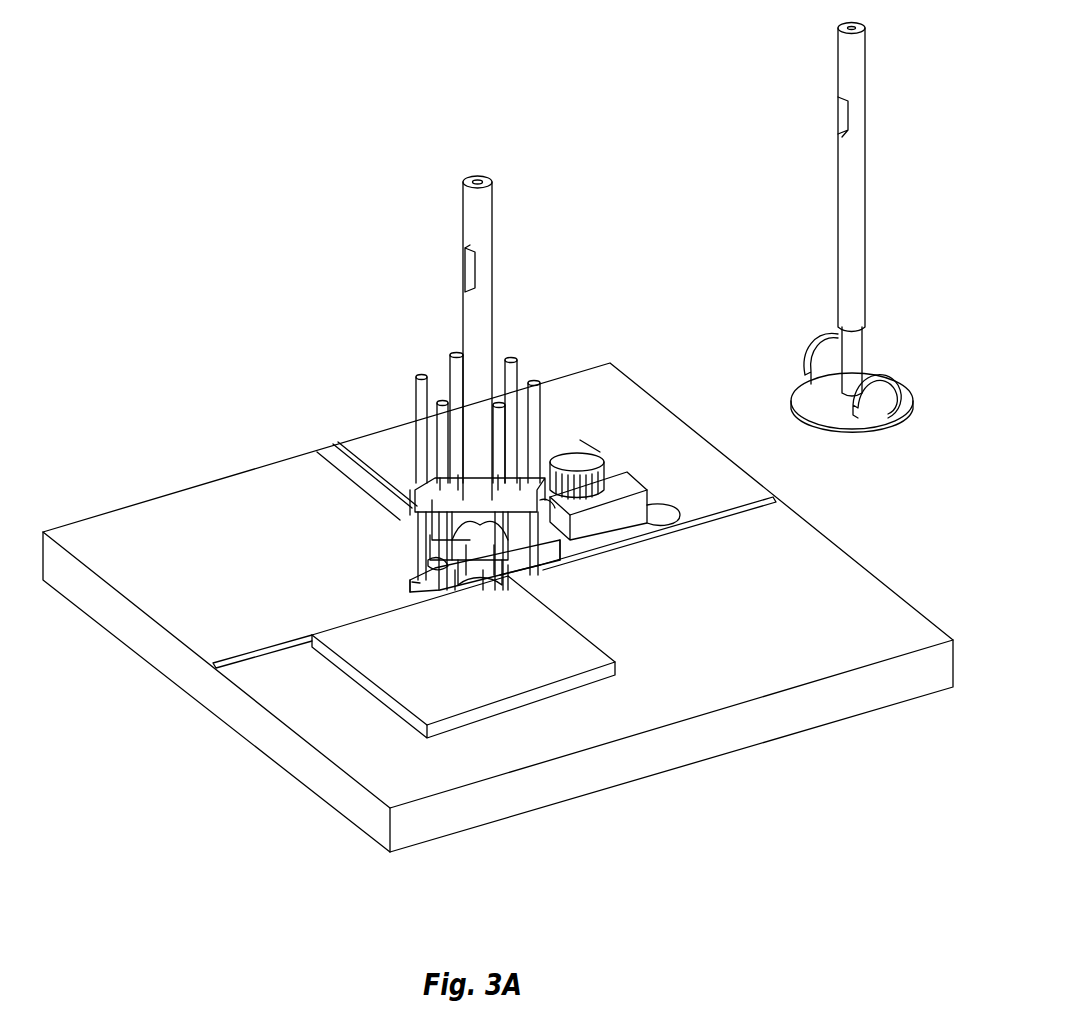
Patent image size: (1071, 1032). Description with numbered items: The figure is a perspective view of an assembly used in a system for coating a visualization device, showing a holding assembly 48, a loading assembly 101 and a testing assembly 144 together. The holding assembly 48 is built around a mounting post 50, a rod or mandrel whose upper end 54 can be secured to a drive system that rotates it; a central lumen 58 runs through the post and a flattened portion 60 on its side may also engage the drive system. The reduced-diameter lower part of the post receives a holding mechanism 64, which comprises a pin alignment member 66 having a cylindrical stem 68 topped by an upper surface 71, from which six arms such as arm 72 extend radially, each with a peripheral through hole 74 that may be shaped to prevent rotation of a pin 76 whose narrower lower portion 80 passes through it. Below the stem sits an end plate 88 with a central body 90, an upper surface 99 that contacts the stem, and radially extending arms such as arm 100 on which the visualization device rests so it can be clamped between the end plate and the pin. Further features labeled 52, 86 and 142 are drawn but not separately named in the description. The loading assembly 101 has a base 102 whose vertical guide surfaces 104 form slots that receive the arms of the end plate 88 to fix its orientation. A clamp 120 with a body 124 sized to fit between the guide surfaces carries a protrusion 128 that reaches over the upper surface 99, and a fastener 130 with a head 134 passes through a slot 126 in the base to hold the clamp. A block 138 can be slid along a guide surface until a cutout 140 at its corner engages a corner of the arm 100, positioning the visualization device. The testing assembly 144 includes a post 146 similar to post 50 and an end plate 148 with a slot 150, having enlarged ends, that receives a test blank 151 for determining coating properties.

The holding assembly 48 is at (415, 356).
The mounting post 50 is at (483, 301).
The shaft body 52 is at (454, 301).
The upper end 54 is at (480, 178).
The central lumen 58 is at (476, 178).
The flattened portion 60 is at (466, 270).
The holding mechanism 64 is at (388, 480).
The pin alignment member 66 is at (486, 585).
The stem 68 is at (463, 585).
The upper surface 71 is at (442, 440).
The arm 72 is at (415, 496).
The peripheral through hole 74 is at (412, 482).
The pin 76 is at (448, 522).
The lower portion 80 is at (450, 536).
The pins 86 is at (452, 470).
The end plate 88 is at (525, 593).
The central body 90 is at (440, 583).
The upper surface 99 is at (458, 552).
The arm 100 is at (446, 567).
The loading assembly 101 is at (498, 607).
The base 102 is at (72, 592).
The vertical guide surfaces 104 is at (252, 650).
The clamp 120 is at (594, 417).
The body 124 is at (634, 518).
The slot 126 is at (578, 505).
The protrusion 128 is at (524, 581).
The fastener 130 is at (606, 470).
The head 134 is at (578, 458).
The block 138 is at (497, 692).
The cutout 140 is at (497, 588).
The bracket 142 is at (442, 612).
The testing assembly 144 is at (877, 235).
The post 146 is at (864, 125).
The end plate 148 is at (905, 390).
The slot 150 is at (905, 408).
The blank 151 is at (880, 385).